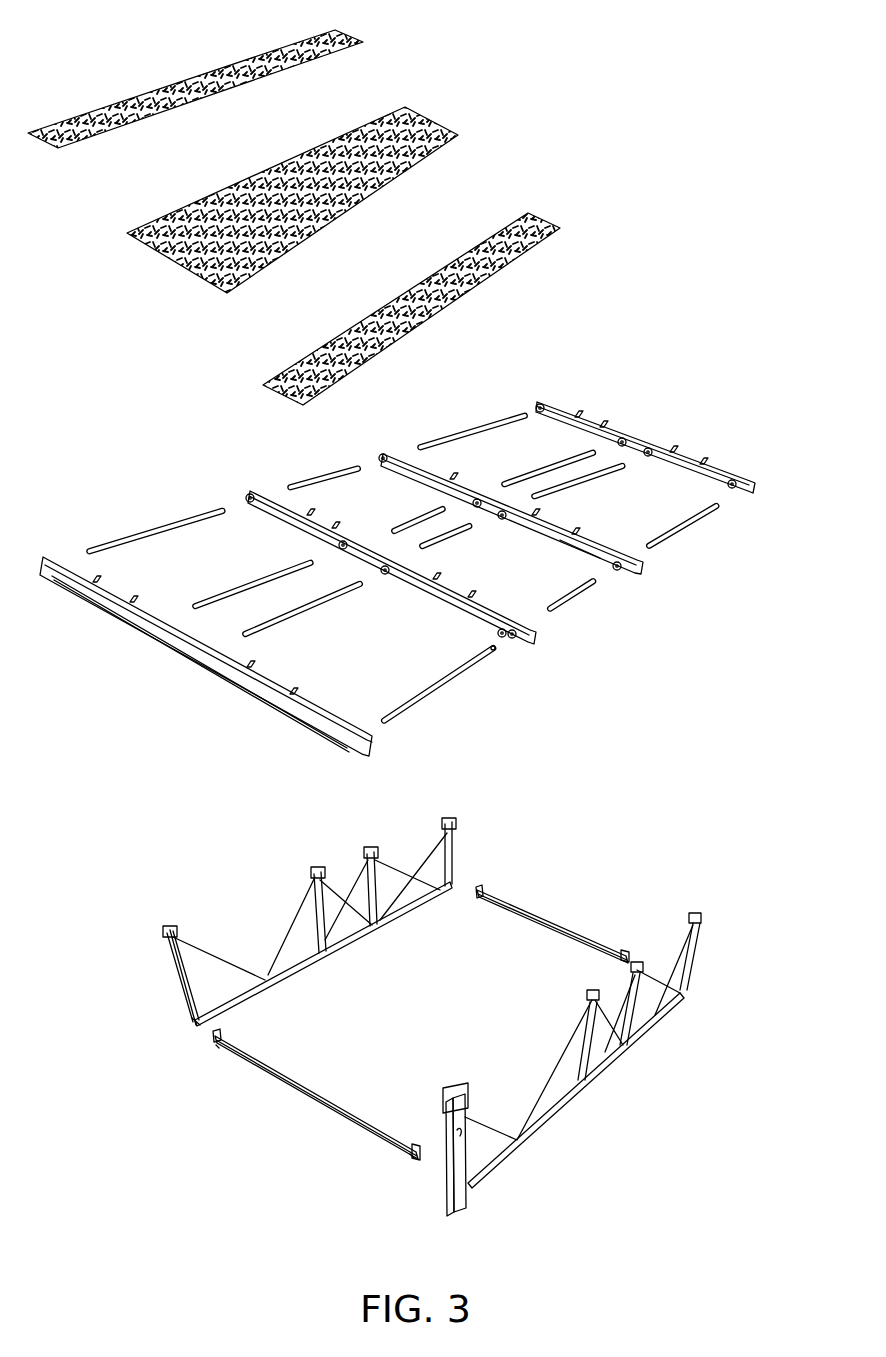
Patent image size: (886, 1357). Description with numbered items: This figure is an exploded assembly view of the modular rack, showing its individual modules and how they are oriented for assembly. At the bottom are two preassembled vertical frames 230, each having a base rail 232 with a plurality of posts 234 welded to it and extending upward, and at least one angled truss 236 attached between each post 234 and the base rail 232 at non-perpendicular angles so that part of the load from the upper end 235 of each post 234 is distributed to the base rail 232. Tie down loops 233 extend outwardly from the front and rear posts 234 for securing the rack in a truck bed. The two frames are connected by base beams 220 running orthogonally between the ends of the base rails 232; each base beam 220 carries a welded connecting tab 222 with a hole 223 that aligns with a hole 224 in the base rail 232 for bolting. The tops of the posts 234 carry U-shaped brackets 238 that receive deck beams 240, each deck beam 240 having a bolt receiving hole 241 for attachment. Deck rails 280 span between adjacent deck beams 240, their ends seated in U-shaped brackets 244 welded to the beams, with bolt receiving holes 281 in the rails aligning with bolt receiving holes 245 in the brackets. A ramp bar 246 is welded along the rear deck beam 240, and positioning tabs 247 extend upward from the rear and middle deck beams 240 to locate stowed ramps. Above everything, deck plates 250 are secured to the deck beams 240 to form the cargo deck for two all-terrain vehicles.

The base beam 220 is at (300, 1093).
The connecting tab 222 is at (215, 1040).
The hole 223 is at (218, 1045).
The hole 224 is at (192, 1023).
The vertical frame 230 is at (130, 1020).
The base rail 232 is at (247, 1000).
The tie down loop 233 is at (467, 1150).
The post 234 is at (175, 990).
The upper end 235 is at (172, 970).
The angled truss 236 is at (300, 913).
The U-shaped bracket 238 is at (312, 870).
The deck beam 240 is at (630, 435).
The bolt receiving hole 241 is at (578, 543).
The U-shaped bracket 244 is at (250, 500).
The bolt receiving hole 245 is at (512, 638).
The ramp bar 246 is at (217, 677).
The positioning tab 247 is at (248, 667).
The deck plate 250 is at (135, 100).
The deck rail 280 is at (167, 528).
The bolt receiving hole 281 is at (492, 650).